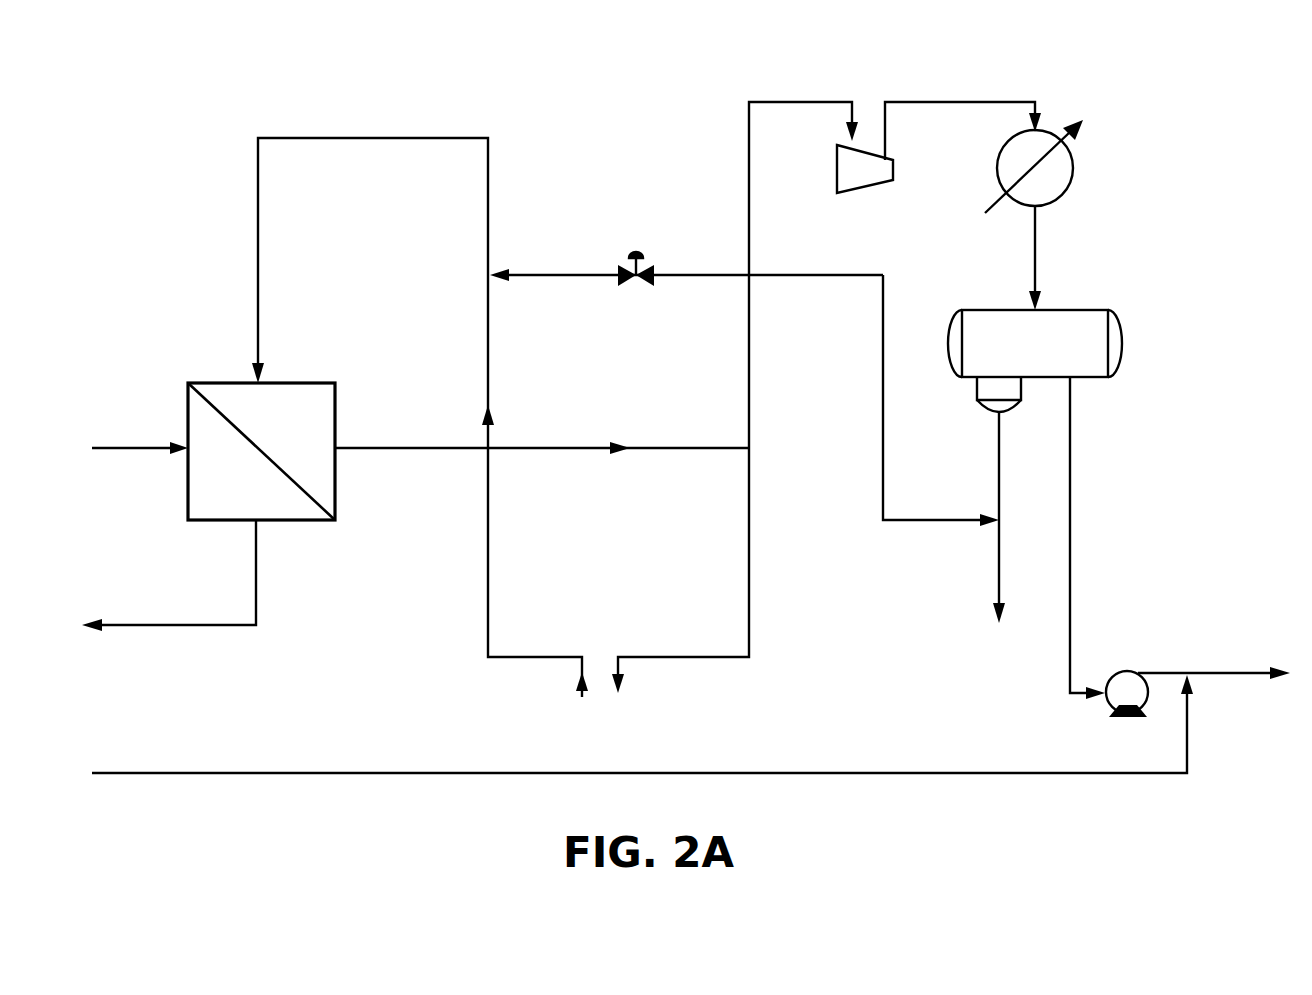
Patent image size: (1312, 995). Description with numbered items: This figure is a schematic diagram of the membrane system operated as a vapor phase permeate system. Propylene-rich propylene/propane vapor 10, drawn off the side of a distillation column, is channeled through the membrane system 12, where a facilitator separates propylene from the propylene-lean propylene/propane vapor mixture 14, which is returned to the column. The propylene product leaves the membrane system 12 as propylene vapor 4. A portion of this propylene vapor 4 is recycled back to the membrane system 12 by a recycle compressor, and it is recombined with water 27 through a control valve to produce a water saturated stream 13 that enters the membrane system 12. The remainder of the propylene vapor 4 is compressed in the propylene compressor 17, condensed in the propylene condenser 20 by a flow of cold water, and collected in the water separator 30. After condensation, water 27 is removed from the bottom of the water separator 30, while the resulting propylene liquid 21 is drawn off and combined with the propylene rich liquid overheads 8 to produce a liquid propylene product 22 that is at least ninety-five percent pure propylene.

The propylene vapor 4 is at (409, 448).
The propylene rich liquid overheads 8 is at (373, 773).
The propylene-rich propylene/propane vapor 10 is at (121, 443).
The membrane system 12 is at (222, 382).
The water saturated stream 13 is at (398, 138).
The propylene-lean propylene/propane vapor mixture 14 is at (256, 563).
The propylene compressor 17 is at (893, 170).
The propylene condenser 20 is at (1068, 201).
The propylene liquid 21 is at (1070, 513).
The liquid propylene product 22 is at (1215, 673).
The water 27 is at (883, 389).
The water separator 30 is at (1076, 310).